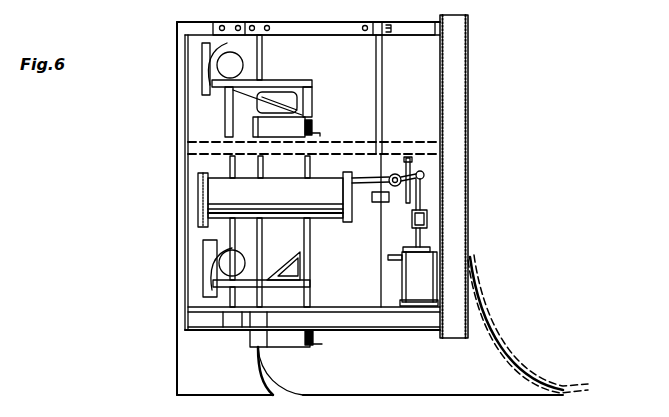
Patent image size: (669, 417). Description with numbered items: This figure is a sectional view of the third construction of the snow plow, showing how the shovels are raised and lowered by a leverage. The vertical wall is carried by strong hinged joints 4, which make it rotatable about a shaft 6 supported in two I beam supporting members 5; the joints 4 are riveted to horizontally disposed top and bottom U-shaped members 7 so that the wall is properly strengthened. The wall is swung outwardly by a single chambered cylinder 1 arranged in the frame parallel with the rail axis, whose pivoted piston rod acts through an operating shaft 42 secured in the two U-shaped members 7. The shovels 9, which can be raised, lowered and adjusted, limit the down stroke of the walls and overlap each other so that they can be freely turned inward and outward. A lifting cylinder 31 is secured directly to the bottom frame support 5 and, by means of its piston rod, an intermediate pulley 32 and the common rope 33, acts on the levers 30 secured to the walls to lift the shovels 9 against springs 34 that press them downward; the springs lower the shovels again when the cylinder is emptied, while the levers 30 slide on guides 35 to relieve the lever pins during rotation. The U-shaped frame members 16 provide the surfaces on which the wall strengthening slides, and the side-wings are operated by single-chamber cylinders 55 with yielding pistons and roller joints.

The single chambered cylinder 1 is at (275, 199).
The hinged joint 4 is at (440, 38).
The I beam supporting member 5 is at (385, 142).
The shaft 6 is at (448, 106).
The U-shaped member 7 is at (331, 30).
The shovel 9 is at (310, 382).
The U-shaped frame member 16 is at (316, 122).
The lever 30 is at (358, 182).
The lifting cylinder 31 is at (413, 279).
The intermediate pulley 32 is at (428, 221).
The common rope 33 is at (421, 197).
The spring 34 is at (205, 388).
The guide 35 is at (407, 203).
The operating shaft 42 is at (383, 60).
The single-chamber cylinder 55 is at (242, 65).